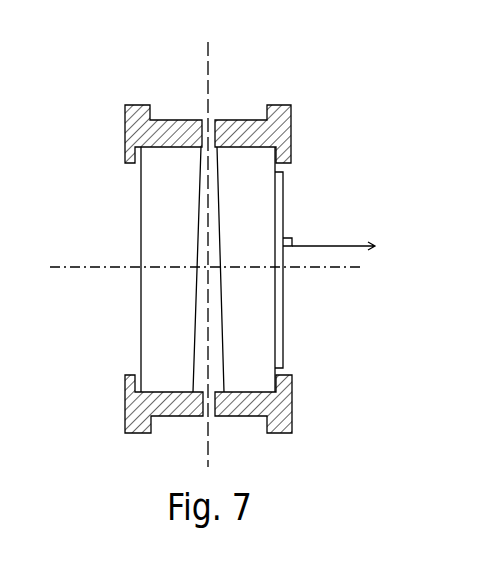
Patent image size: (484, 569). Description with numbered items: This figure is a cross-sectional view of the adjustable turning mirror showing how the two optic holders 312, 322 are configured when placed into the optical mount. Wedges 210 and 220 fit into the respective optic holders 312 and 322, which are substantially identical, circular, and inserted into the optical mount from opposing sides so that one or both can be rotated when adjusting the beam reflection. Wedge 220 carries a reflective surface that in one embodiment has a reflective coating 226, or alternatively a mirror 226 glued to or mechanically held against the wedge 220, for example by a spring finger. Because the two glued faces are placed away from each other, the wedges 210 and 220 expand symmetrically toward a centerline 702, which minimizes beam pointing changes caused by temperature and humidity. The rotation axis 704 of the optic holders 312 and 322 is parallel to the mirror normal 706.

The optic holder 312 is at (132, 92).
The optic holder 322 is at (288, 90).
The wedge 210 is at (183, 218).
The wedge 220 is at (262, 218).
The reflective coating or mirror 226 is at (285, 207).
The centerline 702 is at (208, 57).
The rotation axis 704 is at (322, 268).
The mirror normal 706 is at (325, 246).